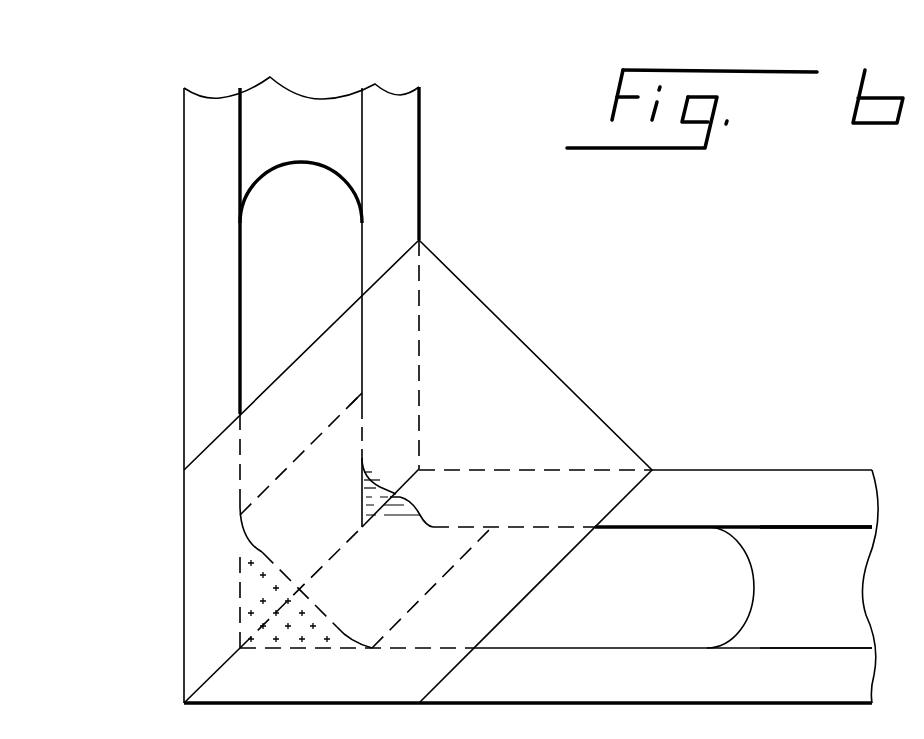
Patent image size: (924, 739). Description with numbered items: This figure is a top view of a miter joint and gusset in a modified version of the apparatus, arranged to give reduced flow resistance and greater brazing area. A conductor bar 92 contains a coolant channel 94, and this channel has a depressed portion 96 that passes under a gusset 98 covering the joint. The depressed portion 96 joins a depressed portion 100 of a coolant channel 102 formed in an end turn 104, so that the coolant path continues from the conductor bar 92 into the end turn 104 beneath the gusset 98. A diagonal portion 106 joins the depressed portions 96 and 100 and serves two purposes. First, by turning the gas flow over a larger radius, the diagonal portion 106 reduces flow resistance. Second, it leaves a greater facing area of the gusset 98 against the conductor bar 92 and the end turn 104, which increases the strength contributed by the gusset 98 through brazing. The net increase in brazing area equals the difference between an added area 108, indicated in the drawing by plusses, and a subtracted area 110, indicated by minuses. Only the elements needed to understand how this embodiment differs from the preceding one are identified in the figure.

The conductor bar 92 is at (747, 475).
The coolant channel 94 is at (822, 562).
The depressed portion 96 is at (677, 583).
The gusset 98 is at (570, 380).
The depressed portion 100 is at (307, 262).
The coolant channel 102 is at (310, 123).
The end turn 104 is at (408, 157).
The diagonal portion 106 is at (438, 558).
The added area 108 is at (252, 588).
The subtracted area 110 is at (383, 486).